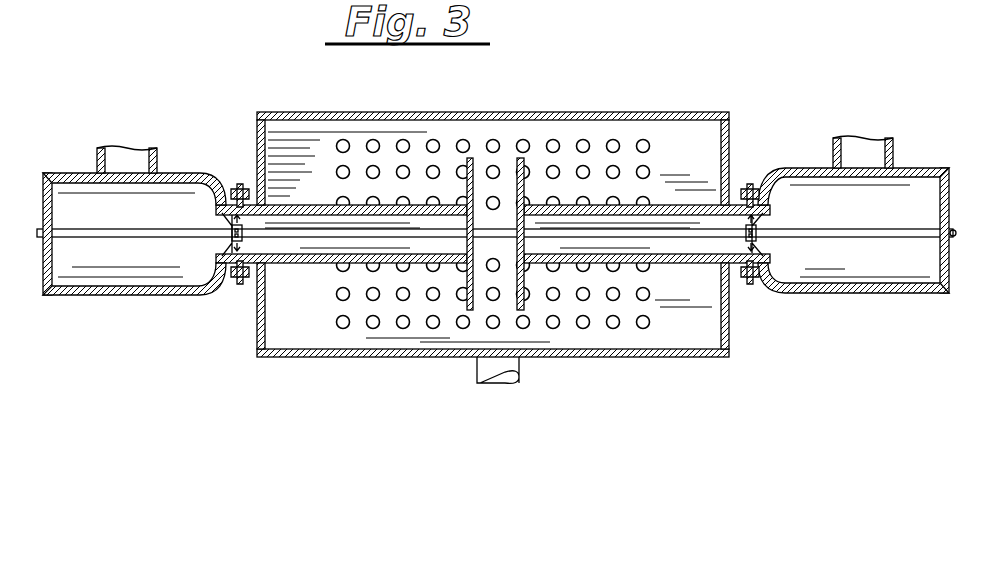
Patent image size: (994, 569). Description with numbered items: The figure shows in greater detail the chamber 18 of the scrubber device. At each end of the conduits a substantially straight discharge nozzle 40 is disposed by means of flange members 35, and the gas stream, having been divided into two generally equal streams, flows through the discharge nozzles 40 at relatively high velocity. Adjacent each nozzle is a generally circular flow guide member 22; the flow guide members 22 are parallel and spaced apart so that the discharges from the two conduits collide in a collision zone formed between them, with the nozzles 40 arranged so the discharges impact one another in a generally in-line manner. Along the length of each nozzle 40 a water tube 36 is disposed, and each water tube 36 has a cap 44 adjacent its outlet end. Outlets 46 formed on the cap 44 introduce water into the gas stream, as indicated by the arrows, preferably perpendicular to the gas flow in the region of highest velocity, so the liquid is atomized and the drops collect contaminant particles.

The chamber 18 is at (733, 330).
The flow guide member 22 is at (464, 160).
The flange member 35 is at (242, 282).
The water tube 36 is at (133, 238).
The discharge nozzle 40 is at (304, 264).
The cap 44 is at (218, 192).
The outlet 46 is at (228, 262).